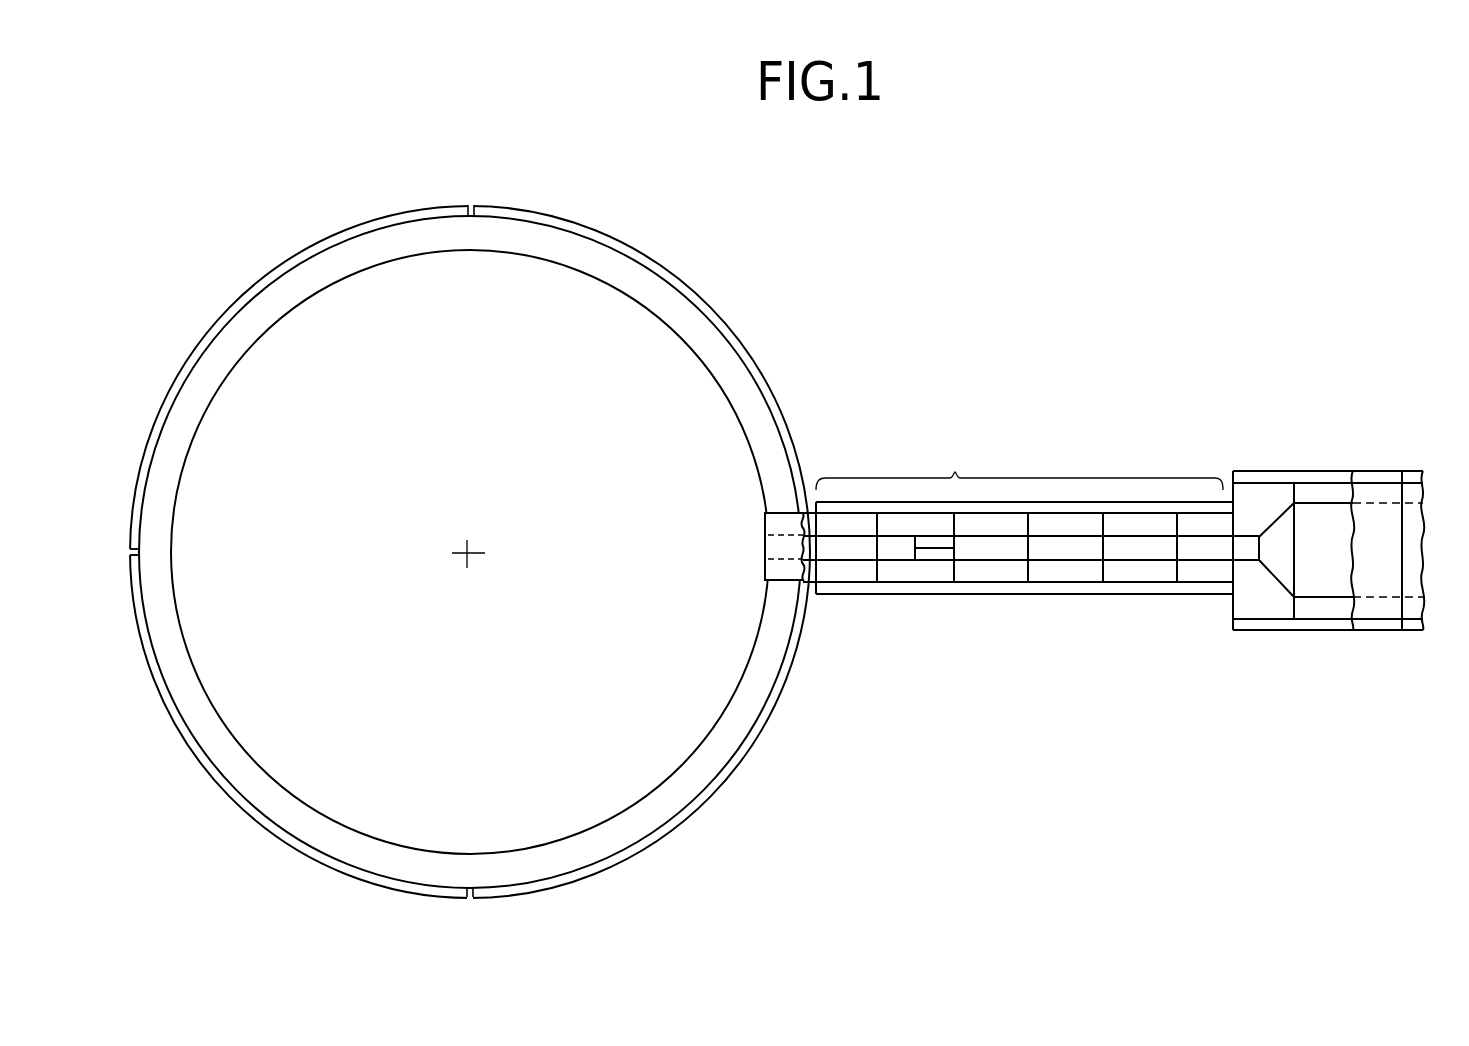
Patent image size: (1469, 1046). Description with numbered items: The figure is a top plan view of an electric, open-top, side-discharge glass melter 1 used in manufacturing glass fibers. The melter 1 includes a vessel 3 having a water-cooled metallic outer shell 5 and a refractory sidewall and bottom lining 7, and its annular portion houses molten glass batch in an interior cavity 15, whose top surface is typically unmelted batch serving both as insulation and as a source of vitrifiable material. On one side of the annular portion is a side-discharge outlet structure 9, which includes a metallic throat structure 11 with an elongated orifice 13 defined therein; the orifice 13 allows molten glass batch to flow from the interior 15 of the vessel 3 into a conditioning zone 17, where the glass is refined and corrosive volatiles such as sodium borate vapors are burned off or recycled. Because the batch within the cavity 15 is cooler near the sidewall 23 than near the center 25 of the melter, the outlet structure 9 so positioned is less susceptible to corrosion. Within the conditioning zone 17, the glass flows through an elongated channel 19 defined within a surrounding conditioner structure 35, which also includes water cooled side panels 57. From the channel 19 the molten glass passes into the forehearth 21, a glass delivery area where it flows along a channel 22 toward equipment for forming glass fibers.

The melter 1 is at (826, 302).
The vessel 3 is at (768, 723).
The outer shell 5 is at (748, 746).
The refractory sidewall and bottom lining 7 is at (760, 688).
The side-discharge outlet structure 9 is at (736, 512).
The throat structure 11 is at (778, 576).
The elongated orifice 13 is at (783, 547).
The interior cavity 15 is at (450, 417).
The conditioning zone 17 is at (1031, 514).
The elongated channel 19 is at (995, 547).
The forehearth 21 is at (1312, 452).
The channel 22 is at (1320, 581).
The sidewall 23 is at (670, 325).
The center 25 is at (470, 551).
The conditioner structure 35 is at (1092, 593).
The water cooled side panels 57 is at (915, 508).